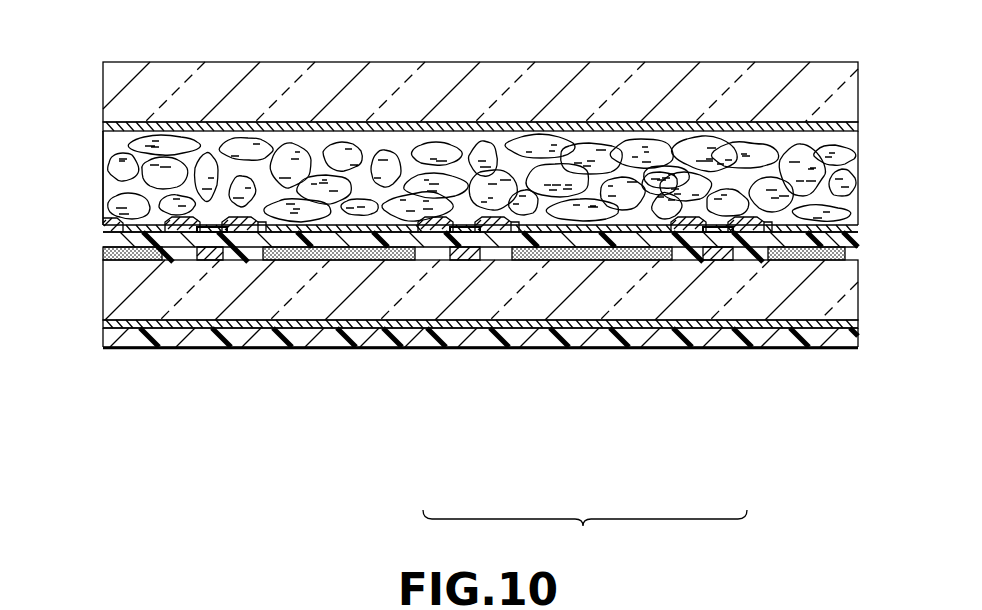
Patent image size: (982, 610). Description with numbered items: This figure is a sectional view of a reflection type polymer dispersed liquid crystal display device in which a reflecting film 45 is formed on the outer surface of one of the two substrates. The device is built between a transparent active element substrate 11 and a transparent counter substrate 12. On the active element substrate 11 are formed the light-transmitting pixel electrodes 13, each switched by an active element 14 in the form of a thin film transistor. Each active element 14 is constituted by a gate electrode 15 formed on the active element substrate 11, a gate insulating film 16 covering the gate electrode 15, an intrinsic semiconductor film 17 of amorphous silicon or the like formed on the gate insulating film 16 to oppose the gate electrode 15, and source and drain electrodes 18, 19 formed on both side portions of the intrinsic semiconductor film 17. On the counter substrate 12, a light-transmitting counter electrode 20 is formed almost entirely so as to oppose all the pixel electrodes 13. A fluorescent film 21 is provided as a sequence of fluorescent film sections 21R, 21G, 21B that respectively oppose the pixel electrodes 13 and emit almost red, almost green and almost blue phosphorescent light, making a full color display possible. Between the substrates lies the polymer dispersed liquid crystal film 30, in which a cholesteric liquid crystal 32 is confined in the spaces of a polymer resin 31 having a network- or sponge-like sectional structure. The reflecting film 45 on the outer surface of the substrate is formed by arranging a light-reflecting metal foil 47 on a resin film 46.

The active element substrate 11 is at (822, 302).
The counter substrate 12 is at (716, 85).
The pixel electrode 13 is at (303, 245).
The active element 14 is at (222, 262).
The gate electrode 15 is at (478, 245).
The gate insulating film 16 is at (493, 224).
The intrinsic semiconductor film 17 is at (458, 234).
The source electrode 18 is at (513, 231).
The drain electrode 19 is at (437, 232).
The counter electrode 20 is at (543, 127).
The fluorescent film 21 is at (585, 533).
The red fluorescent film section 21R is at (378, 262).
The green fluorescent film section 21G is at (635, 262).
The blue fluorescent film section 21B is at (781, 262).
The polymer dispersed liquid crystal film 30 is at (94, 140).
The polymer resin 31 is at (382, 135).
The cholesteric liquid crystal 32 is at (302, 158).
The reflecting film 45 is at (172, 349).
The resin film 46 is at (118, 335).
The light-reflecting metal foil 47 is at (133, 322).